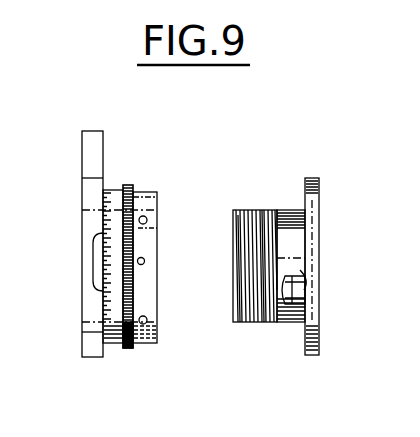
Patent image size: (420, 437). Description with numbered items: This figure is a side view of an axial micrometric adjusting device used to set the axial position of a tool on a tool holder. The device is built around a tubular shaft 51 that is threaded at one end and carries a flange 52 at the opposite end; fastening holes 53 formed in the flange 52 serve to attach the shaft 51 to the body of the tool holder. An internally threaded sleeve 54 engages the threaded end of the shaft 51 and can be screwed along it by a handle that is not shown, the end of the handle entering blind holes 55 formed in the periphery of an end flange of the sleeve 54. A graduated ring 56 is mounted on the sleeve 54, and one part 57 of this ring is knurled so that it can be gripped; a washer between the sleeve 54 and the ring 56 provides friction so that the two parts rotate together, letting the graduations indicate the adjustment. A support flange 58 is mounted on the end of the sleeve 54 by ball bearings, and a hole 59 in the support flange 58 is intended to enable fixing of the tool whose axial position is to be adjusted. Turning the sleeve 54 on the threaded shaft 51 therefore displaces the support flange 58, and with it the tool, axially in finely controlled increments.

The tubular shaft 51 is at (256, 212).
The flange 52 is at (312, 184).
The fastening holes 53 is at (300, 300).
The internally threaded sleeve 54 is at (140, 197).
The blind holes 55 is at (145, 262).
The graduated ring 56 is at (115, 333).
The knurled part 57 is at (127, 348).
The support flange 58 is at (91, 154).
The hole 59 is at (91, 179).